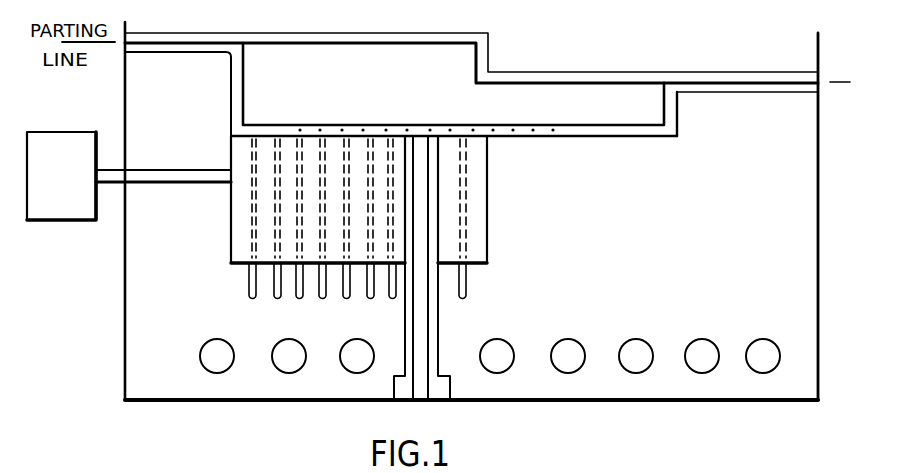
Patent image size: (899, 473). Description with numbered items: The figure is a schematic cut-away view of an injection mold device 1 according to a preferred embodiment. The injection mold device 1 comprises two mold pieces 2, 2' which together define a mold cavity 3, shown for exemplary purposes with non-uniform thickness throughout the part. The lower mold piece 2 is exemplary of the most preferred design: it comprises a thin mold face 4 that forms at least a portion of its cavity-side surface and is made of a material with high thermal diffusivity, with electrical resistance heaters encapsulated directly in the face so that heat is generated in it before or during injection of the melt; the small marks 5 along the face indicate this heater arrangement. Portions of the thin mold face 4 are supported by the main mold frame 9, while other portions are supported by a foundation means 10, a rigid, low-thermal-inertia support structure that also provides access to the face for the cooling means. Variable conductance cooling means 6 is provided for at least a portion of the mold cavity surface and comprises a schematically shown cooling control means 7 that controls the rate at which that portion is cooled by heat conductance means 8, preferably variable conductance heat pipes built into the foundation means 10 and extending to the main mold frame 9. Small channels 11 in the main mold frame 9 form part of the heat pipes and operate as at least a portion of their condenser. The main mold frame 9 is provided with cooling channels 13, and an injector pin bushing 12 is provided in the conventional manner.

The injection mold device 1 is at (146, 427).
The mold piece 2 is at (490, 89).
The mold piece 2' is at (489, 52).
The mold cavity 3 is at (600, 92).
The thin mold face 4 is at (525, 124).
The vent holes 5 is at (385, 132).
The variable conductance cooling means 6 is at (155, 222).
The cooling control means 7 is at (62, 188).
The heat conductance means 8 is at (316, 140).
The main mold frame 9 is at (798, 330).
The foundation means 10 is at (231, 211).
The small channels 11 is at (328, 297).
The injector pin bushing 12 is at (432, 345).
The cooling channels 13 is at (632, 345).